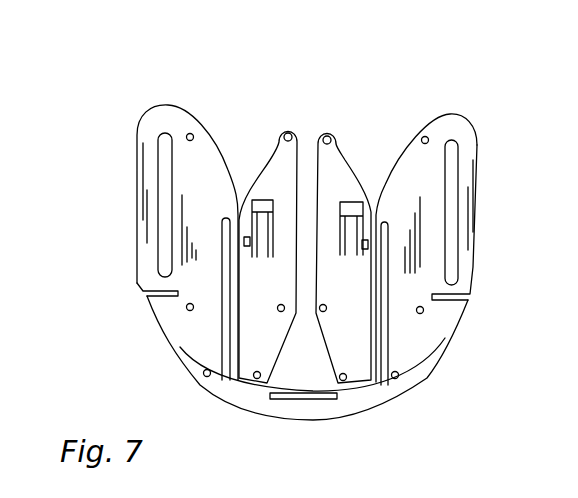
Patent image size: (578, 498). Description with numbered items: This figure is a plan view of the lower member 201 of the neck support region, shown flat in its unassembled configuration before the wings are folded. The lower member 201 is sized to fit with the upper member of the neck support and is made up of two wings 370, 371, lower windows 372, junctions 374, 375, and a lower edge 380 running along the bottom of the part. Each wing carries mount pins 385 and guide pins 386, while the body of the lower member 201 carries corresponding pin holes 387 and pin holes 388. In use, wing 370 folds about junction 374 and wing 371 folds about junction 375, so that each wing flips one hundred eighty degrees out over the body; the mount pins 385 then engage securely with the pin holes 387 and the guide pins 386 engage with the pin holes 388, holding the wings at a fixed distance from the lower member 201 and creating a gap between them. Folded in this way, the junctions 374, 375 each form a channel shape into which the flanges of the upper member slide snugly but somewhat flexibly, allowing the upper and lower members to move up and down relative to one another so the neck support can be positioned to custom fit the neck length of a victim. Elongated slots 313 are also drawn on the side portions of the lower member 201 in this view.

The lower member 201 is at (496, 165).
The pin hole 388 is at (196, 118).
The lower window 372 is at (222, 325).
The lower edge 380 is at (302, 422).
The slot 313 is at (165, 177).
The pin hole 387 is at (186, 307).
The junction 374 is at (233, 357).
The junction 375 is at (386, 328).
The wing 370 is at (273, 180).
The wing 371 is at (350, 180).
The guide pin 386 is at (327, 132).
The mount pin 385 is at (278, 305).